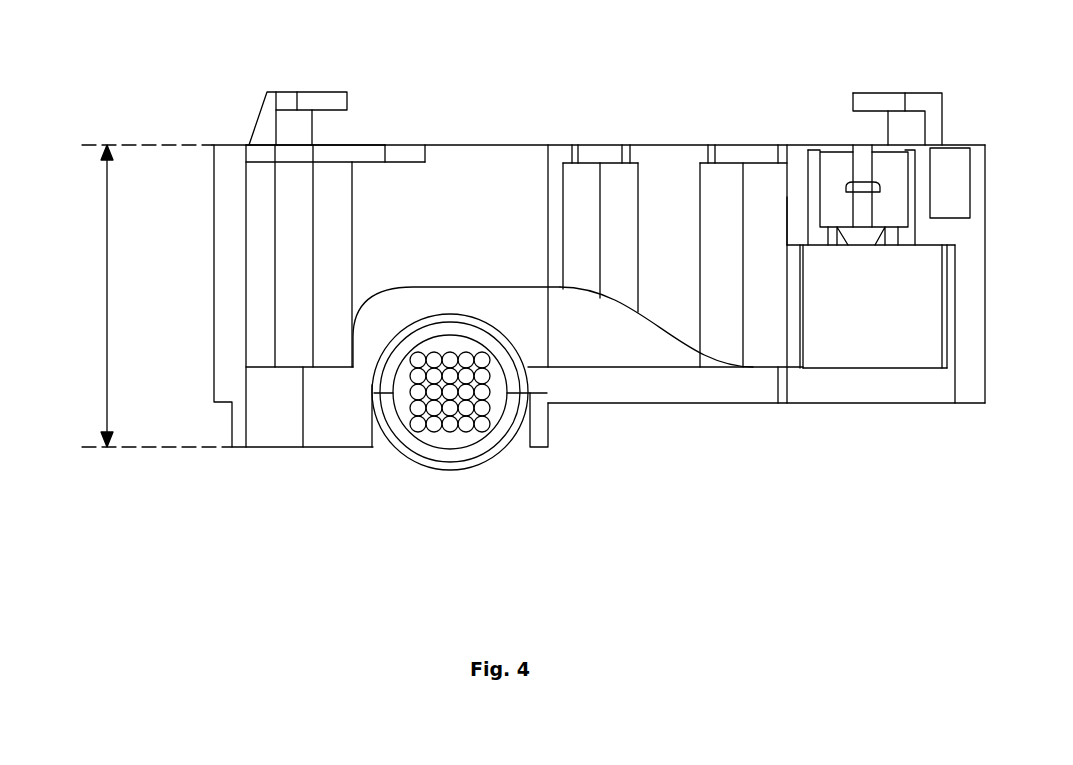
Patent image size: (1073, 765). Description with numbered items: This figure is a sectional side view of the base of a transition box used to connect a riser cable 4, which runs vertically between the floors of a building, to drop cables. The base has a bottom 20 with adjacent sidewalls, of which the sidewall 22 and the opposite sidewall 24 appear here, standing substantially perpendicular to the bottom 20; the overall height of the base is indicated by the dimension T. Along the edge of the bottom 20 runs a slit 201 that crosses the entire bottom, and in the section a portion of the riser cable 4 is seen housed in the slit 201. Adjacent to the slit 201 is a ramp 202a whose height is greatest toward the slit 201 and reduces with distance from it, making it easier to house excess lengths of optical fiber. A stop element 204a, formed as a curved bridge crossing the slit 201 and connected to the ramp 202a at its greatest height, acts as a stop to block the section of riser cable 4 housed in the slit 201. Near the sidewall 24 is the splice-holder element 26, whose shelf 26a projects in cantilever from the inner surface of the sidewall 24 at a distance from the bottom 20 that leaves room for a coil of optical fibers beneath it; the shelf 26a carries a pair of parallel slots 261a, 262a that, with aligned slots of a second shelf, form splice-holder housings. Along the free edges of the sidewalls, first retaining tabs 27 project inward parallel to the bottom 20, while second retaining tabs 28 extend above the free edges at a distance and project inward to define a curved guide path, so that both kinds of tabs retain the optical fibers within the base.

The height of carriage T is at (152, 296).
The riser cable 4 is at (413, 463).
The bottom 20 is at (757, 404).
The slit 201 is at (373, 423).
The ramp 202a is at (661, 322).
The stop element 204a is at (481, 287).
The sidewall 22 is at (214, 283).
The sidewall 24 is at (987, 250).
The splice-holder element 26 is at (838, 131).
The shelf 26a is at (787, 197).
The slot 261a is at (852, 247).
The slot 262a is at (870, 247).
The first retaining tab 27 is at (372, 145).
The second retaining tab 28 is at (274, 92).